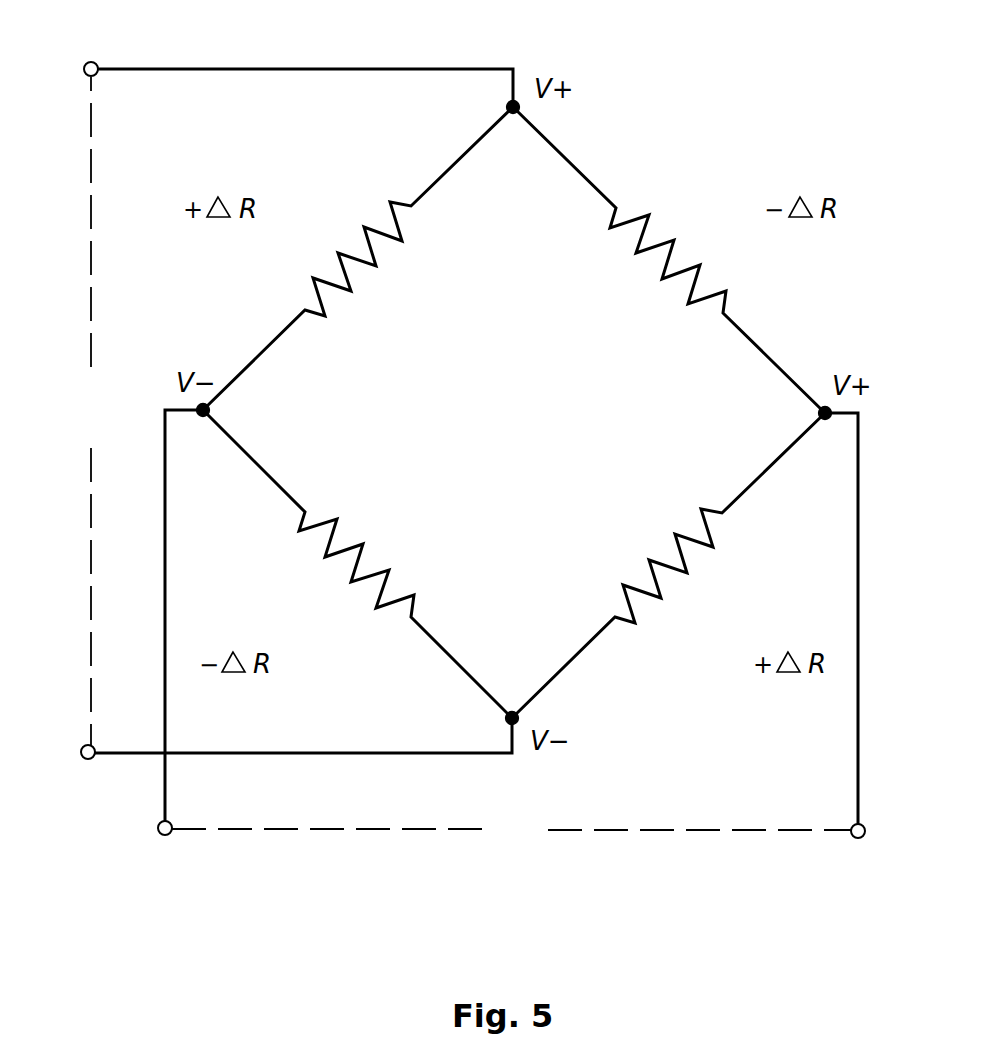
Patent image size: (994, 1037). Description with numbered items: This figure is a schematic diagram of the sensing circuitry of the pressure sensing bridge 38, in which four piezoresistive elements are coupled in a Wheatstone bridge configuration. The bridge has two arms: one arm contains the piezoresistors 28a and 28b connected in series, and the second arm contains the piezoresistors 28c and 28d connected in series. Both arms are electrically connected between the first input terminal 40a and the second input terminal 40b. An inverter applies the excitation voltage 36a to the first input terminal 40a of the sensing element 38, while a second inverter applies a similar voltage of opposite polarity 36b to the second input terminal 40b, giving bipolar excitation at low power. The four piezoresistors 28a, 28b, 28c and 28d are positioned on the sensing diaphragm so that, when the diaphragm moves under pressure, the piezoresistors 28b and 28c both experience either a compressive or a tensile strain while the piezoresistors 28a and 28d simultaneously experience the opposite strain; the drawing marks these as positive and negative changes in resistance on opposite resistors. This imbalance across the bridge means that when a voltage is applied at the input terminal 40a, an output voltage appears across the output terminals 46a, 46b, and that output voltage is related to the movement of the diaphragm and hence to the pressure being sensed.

The excitation voltage 36a is at (176, 68).
The opposite-polarity excitation voltage 36b is at (121, 758).
The first input terminal 40a is at (483, 95).
The second input terminal 40b is at (483, 720).
The piezoresistor 28a is at (669, 260).
The piezoresistor 28b is at (668, 565).
The piezoresistor 28c is at (358, 258).
The piezoresistor 28d is at (357, 564).
The output terminal 46a is at (874, 644).
The output terminal 46b is at (160, 642).
The sensing element 38 is at (76, 875).